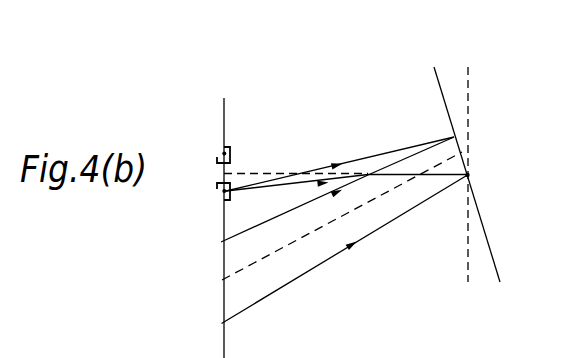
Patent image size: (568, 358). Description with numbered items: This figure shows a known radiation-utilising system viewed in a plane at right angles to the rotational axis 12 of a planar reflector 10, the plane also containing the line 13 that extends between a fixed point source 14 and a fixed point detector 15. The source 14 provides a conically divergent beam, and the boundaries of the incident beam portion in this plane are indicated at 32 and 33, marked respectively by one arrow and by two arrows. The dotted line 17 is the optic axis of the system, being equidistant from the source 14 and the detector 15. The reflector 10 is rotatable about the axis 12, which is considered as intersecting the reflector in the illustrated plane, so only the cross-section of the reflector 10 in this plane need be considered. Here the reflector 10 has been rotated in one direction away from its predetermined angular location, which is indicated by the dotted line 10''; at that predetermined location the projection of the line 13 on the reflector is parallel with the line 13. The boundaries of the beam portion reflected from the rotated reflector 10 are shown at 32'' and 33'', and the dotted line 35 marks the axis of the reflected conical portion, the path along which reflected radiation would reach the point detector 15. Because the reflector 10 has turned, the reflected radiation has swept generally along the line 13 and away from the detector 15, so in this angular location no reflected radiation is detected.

The planar reflector 10 is at (467, 153).
The predetermined angular location of the reflector 10'' is at (497, 174).
The rotational axis 12 is at (468, 175).
The line extending between source and detector 13 is at (224, 344).
The source 14 is at (219, 191).
The detector 15 is at (222, 153).
The optic axis 17 is at (265, 173).
The boundary of incident conical beam portion 32 is at (340, 148).
The boundary of incident conical beam portion 33 is at (411, 130).
The boundary of reflected beam portion 32'' is at (294, 208).
The boundary of reflected beam portion 33'' is at (345, 249).
The axis of the reflected beam portion 35 is at (247, 268).